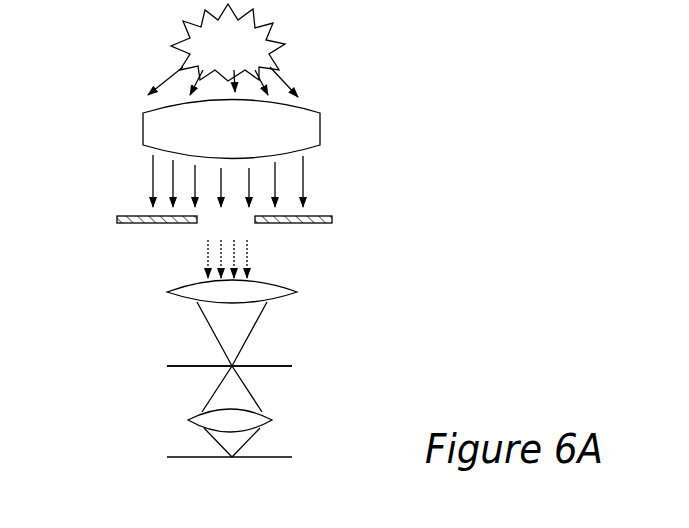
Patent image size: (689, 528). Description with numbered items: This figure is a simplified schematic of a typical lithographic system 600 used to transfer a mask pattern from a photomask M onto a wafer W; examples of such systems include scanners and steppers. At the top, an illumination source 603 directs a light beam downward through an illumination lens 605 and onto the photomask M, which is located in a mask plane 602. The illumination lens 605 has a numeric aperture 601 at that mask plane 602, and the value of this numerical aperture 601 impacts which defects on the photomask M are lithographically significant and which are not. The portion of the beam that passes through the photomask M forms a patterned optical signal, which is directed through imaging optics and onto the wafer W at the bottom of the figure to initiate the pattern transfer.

The lithographic system 600 is at (343, 39).
The numeric aperture 601 is at (255, 320).
The mask plane 602 is at (155, 365).
The illumination source 603 is at (190, 42).
The illumination lens 605 is at (167, 292).
The photomask M is at (276, 366).
The wafer W is at (190, 455).